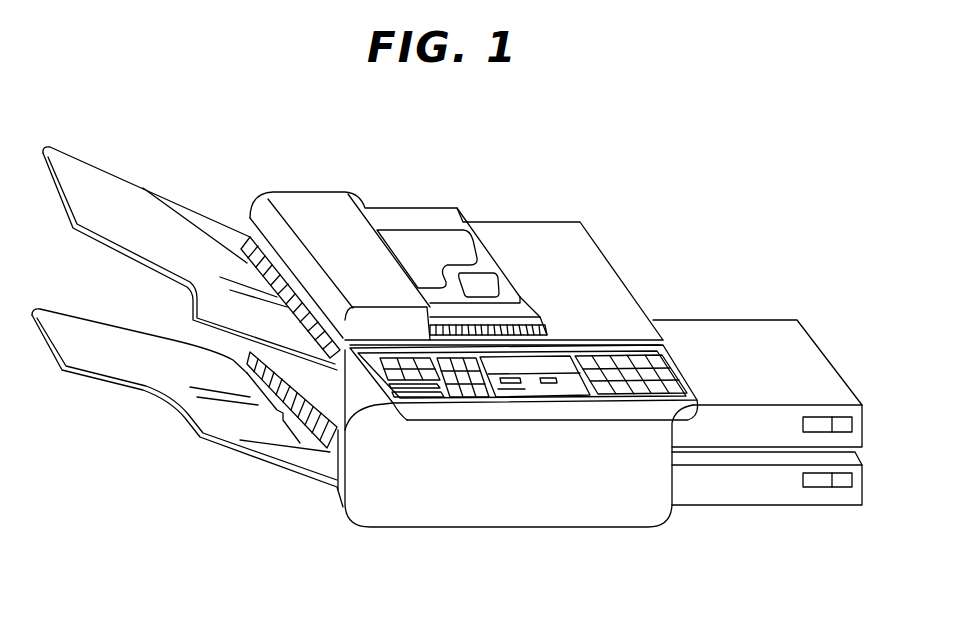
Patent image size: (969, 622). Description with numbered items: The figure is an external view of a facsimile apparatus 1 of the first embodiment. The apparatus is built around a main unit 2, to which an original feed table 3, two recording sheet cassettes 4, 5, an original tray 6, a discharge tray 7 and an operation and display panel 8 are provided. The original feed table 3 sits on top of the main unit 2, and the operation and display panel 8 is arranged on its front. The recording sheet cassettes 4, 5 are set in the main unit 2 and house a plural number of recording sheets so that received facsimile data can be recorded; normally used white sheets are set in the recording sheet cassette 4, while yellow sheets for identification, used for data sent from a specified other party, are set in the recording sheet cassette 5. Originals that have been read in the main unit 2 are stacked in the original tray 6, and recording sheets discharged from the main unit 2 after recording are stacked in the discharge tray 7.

The facsimile apparatus 1 is at (668, 158).
The main unit 2 is at (554, 222).
The original feed table 3 is at (406, 207).
The recording sheet cassette 4 is at (744, 322).
The recording sheet cassette 5 is at (743, 494).
The original tray 6 is at (90, 172).
The discharge tray 7 is at (112, 380).
The operation and display panel 8 is at (555, 420).